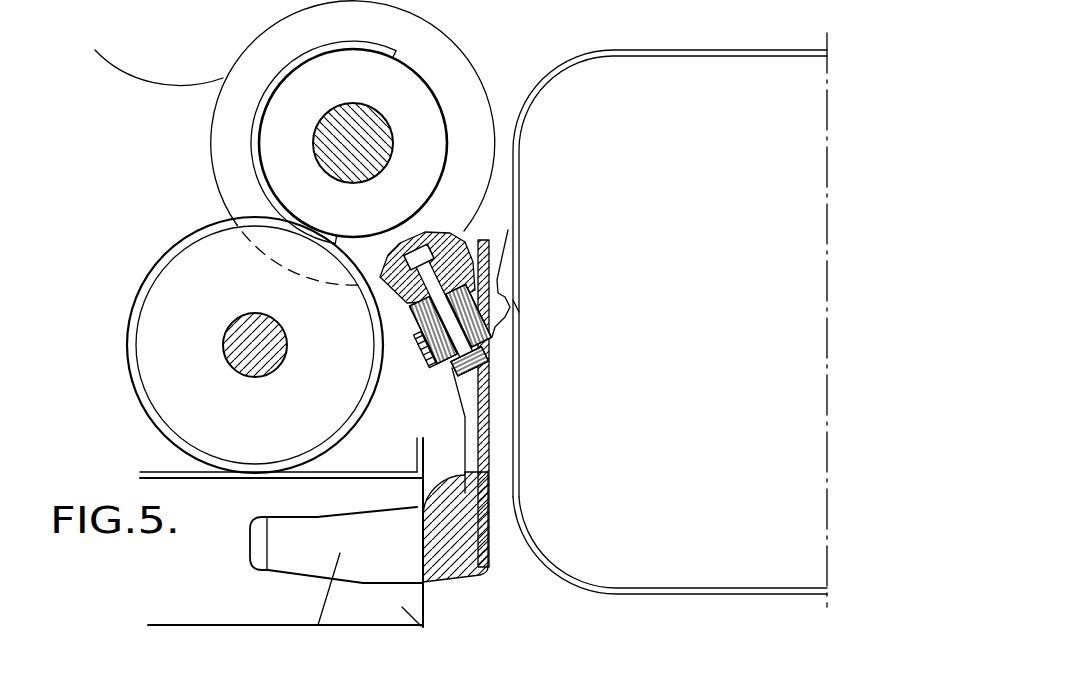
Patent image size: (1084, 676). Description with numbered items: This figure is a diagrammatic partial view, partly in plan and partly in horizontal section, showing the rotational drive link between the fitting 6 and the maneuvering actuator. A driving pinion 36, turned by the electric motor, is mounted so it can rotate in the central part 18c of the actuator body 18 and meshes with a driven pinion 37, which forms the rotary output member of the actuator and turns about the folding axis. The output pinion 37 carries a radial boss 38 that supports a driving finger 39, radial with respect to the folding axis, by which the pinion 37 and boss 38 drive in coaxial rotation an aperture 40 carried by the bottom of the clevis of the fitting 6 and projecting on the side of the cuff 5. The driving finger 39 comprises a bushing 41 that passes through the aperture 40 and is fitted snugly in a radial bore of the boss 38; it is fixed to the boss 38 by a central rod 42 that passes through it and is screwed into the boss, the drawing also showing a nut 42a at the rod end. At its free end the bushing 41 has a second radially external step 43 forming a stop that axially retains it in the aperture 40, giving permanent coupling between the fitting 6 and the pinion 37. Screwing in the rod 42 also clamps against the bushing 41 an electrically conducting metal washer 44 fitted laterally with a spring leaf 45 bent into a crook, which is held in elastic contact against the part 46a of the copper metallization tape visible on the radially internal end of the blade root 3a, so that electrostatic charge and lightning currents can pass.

The blade root 3a is at (600, 568).
The cuff 5 is at (118, 102).
The fitting 6 is at (458, 543).
The actuator body 18 is at (713, 590).
The central part of the actuator body 18c is at (403, 463).
The driving pinion 36 is at (190, 290).
The driven pinion 37 is at (297, 95).
The radial boss 38 is at (480, 208).
The driving finger 39 is at (489, 384).
The aperture 40 is at (437, 343).
The bushing 41 is at (487, 310).
The central rod 42 is at (423, 293).
The nut 42a is at (492, 367).
The second radially external step 43 is at (450, 357).
The electrically conducting metal washer 44 is at (452, 368).
The spring leaf 45 is at (515, 307).
The part of the tape 46a is at (517, 308).